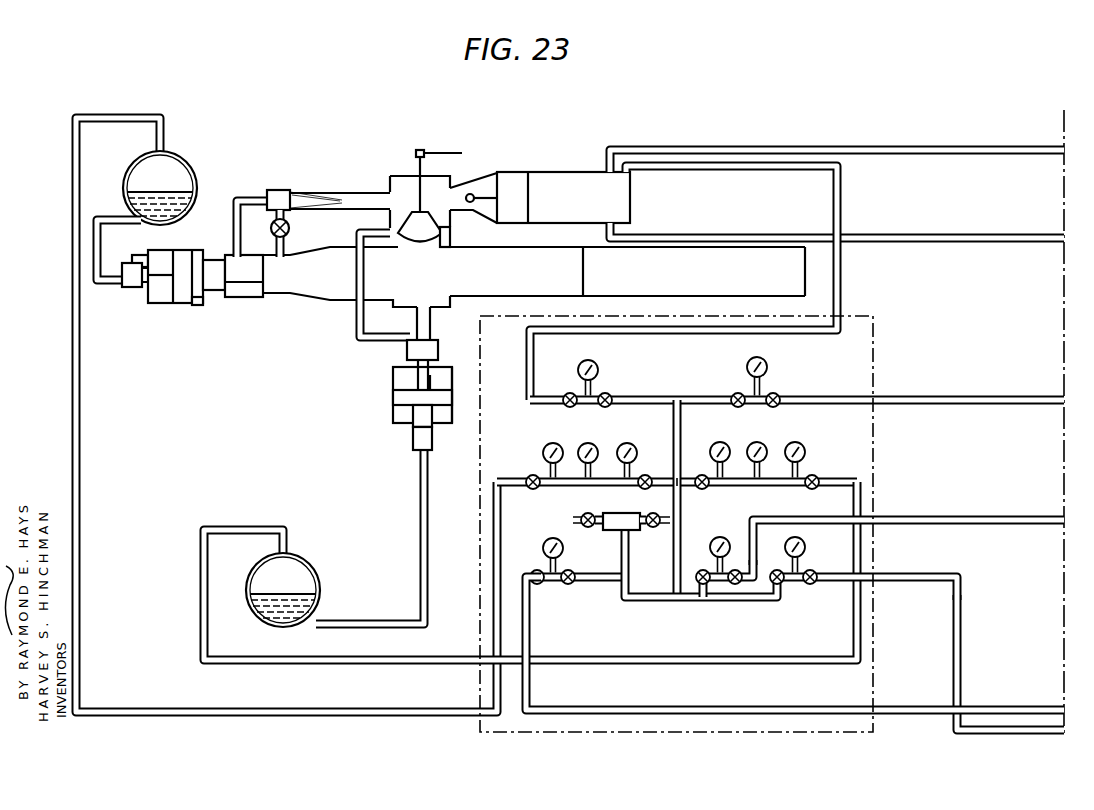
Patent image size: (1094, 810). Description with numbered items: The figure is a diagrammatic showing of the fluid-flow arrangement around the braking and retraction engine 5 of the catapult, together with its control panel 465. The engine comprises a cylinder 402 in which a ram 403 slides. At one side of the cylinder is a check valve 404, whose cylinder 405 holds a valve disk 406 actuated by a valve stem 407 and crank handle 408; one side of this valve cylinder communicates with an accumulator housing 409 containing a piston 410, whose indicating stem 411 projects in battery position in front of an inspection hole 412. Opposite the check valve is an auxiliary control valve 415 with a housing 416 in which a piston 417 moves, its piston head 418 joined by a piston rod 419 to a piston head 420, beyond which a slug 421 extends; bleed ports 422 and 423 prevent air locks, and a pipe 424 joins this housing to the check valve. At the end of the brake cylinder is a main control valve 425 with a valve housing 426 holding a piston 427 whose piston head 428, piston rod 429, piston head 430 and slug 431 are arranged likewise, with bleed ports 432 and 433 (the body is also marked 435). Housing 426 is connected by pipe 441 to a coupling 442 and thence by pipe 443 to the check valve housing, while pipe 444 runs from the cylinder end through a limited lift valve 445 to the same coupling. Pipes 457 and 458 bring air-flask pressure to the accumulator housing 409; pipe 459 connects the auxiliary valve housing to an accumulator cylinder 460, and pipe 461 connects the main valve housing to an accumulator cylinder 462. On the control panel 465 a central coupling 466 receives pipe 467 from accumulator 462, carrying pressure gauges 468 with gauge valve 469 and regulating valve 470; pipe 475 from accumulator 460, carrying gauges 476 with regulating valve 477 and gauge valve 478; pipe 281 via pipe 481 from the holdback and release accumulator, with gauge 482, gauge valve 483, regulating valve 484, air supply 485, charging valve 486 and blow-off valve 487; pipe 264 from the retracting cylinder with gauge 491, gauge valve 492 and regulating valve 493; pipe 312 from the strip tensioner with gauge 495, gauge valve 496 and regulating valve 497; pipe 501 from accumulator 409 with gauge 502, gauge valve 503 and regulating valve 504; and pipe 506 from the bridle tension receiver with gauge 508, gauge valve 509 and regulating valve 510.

The braking and retraction engine 5 is at (518, 274).
The pipe 264 is at (960, 517).
The pipe 281 is at (985, 705).
The pipe 312 is at (962, 632).
The cylinder 402 is at (548, 246).
The ram 403 is at (662, 274).
The check valve 404 is at (392, 176).
The cylinder 405 is at (450, 233).
The valve disk 406 is at (415, 232).
The valve stem 407 is at (420, 155).
The crank handle 408 is at (455, 150).
The accumulator housing 409 is at (578, 173).
The piston 410 is at (540, 173).
The indicating stem 411 is at (480, 193).
The inspection hole 412 is at (468, 180).
The auxiliary control valve 415 is at (452, 414).
The housing 416 is at (445, 352).
The piston 417 is at (430, 387).
The piston head 418 is at (405, 352).
The piston rod 419 is at (400, 398).
The piston head 420 is at (413, 415).
The slug 421 is at (418, 432).
The bleed port 422 is at (415, 378).
The bleed port 423 is at (440, 440).
The pipe 424 is at (352, 327).
The main control valve 425 is at (185, 305).
The valve housing 426 is at (172, 252).
The piston 427 is at (193, 250).
The piston head 428 is at (265, 272).
The piston rod 429 is at (250, 284).
The piston head 430 is at (240, 290).
The slug 431 is at (140, 278).
The bleed port 432 is at (197, 305).
The bleed port 433 is at (137, 256).
The housing 435 is at (175, 303).
The pipe 441 is at (240, 198).
The coupling 442 is at (285, 190).
The pipe 443 is at (352, 192).
The pipe 444 is at (287, 241).
The limited lift valve 445 is at (290, 226).
The pipe 457 is at (980, 147).
The pipe 458 is at (980, 235).
The pipe 459 is at (365, 617).
The accumulator cylinder 460 is at (305, 570).
The pipe 461 is at (93, 255).
The accumulator cylinder 462 is at (180, 168).
The control panel 465 is at (812, 735).
The central coupling 466 is at (685, 485).
The pipe 467 is at (70, 193).
The pressure gauges 468 is at (622, 443).
The gauge valve 469 is at (528, 476).
The regulating valve 470 is at (650, 475).
The pipe 475 is at (200, 587).
The pressure gauges 476 is at (792, 442).
The regulating valve 477 is at (703, 475).
The gauge valve 478 is at (818, 475).
The pipe 481 is at (672, 577).
The pressure gauge 482 is at (548, 540).
The gauge valve 483 is at (540, 585).
The regulating valve 484 is at (573, 572).
The air supply 485 is at (625, 513).
The air charging valve 486 is at (586, 511).
The blow-off valve 487 is at (654, 528).
The pressure gauge 491 is at (720, 537).
The gauge valve 492 is at (735, 585).
The regulating valve 493 is at (700, 585).
The pressure gauge 495 is at (805, 547).
The gauge valve 496 is at (812, 585).
The regulating valve 497 is at (780, 585).
The pipe 501 is at (748, 170).
The pressure gauge 502 is at (596, 363).
The gauge valve 503 is at (567, 393).
The regulating valve 504 is at (612, 394).
The pipe 506 is at (945, 397).
The pressure gauge 508 is at (765, 360).
The gauge valve 509 is at (780, 393).
The regulating valve 510 is at (732, 393).